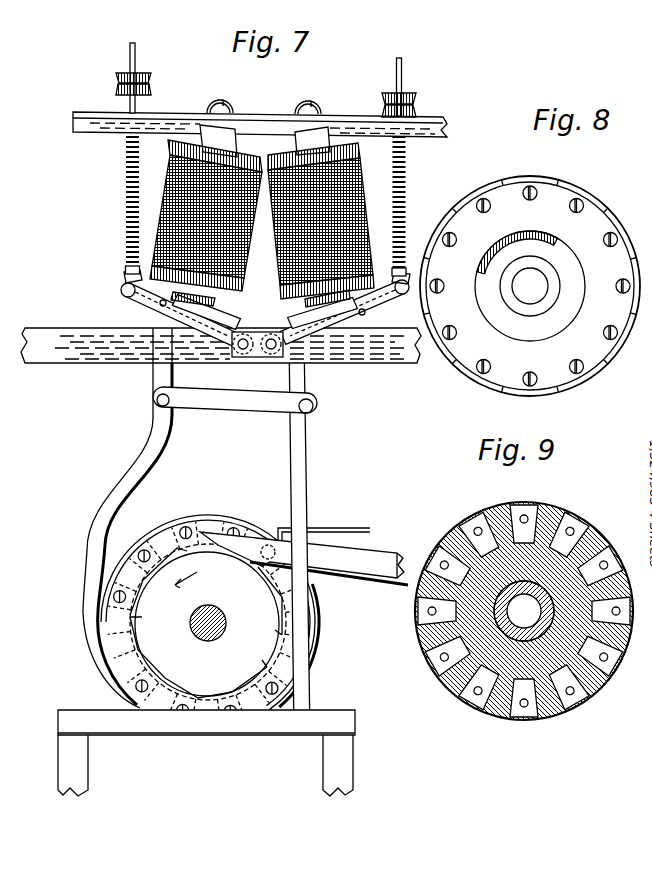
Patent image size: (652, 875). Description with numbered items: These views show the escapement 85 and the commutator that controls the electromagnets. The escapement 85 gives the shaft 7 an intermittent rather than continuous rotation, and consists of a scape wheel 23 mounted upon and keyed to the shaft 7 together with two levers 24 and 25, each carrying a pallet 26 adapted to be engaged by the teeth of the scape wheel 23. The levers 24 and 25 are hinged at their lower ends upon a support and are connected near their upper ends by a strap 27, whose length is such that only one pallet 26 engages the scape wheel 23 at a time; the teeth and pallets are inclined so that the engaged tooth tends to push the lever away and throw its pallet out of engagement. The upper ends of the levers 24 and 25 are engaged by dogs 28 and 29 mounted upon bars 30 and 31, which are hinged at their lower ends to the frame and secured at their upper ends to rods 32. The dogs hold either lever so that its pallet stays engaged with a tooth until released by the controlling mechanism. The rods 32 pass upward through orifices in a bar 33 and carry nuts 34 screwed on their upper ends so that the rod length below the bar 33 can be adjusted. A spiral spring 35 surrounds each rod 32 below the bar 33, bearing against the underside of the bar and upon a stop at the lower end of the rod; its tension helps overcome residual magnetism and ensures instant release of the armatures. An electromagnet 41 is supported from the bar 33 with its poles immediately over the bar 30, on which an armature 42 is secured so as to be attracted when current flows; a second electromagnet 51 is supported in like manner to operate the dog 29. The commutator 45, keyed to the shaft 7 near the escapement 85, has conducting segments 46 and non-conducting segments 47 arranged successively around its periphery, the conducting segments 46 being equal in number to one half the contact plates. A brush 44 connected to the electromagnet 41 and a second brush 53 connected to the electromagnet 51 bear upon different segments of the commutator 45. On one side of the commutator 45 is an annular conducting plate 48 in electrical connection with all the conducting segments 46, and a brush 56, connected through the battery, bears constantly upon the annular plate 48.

In FIG. 7, the shaft 7 is at (212, 637).
In FIG. 7, the scape wheel 23 is at (206, 623).
In FIG. 7, the lever 24 is at (308, 482).
In FIG. 7, the lever 25 is at (150, 484).
In FIG. 7, the pallet 26 is at (120, 640).
In FIG. 7, the strap 27 is at (222, 402).
In FIG. 7, the dog 28 is at (330, 338).
In FIG. 7, the dog 29 is at (168, 322).
In FIG. 7, the bar 30 is at (388, 307).
In FIG. 7, the bar 31 is at (243, 331).
In FIG. 7, the rod 32 is at (126, 211).
In FIG. 7, the bar 33 is at (353, 122).
In FIG. 7, the nut 34 is at (152, 82).
In FIG. 7, the spiral spring 35 is at (126, 176).
In FIG. 7, the electro magnet 41 is at (366, 210).
In FIG. 7, the armature 42 is at (205, 307).
In FIG. 7, the brush 44 is at (353, 529).
In FIG. 8, the commutator 45 is at (582, 308).
In FIG. 9, the commutator 45 is at (524, 611).
In FIG. 7, the conducting segment 46 is at (185, 522).
In FIG. 9, the conducting segment 46 is at (477, 520).
In FIG. 7, the non-conducting segment 47 is at (218, 523).
In FIG. 9, the non-conducting segment 47 is at (457, 538).
In FIG. 8, the annular conducting plate 48 is at (530, 286).
In FIG. 7, the electro-magnet 51 is at (172, 210).
In FIG. 7, the brush 53 is at (396, 587).
In FIG. 7, the brush 56 is at (382, 558).
In FIG. 7, the escapement 85 is at (195, 414).